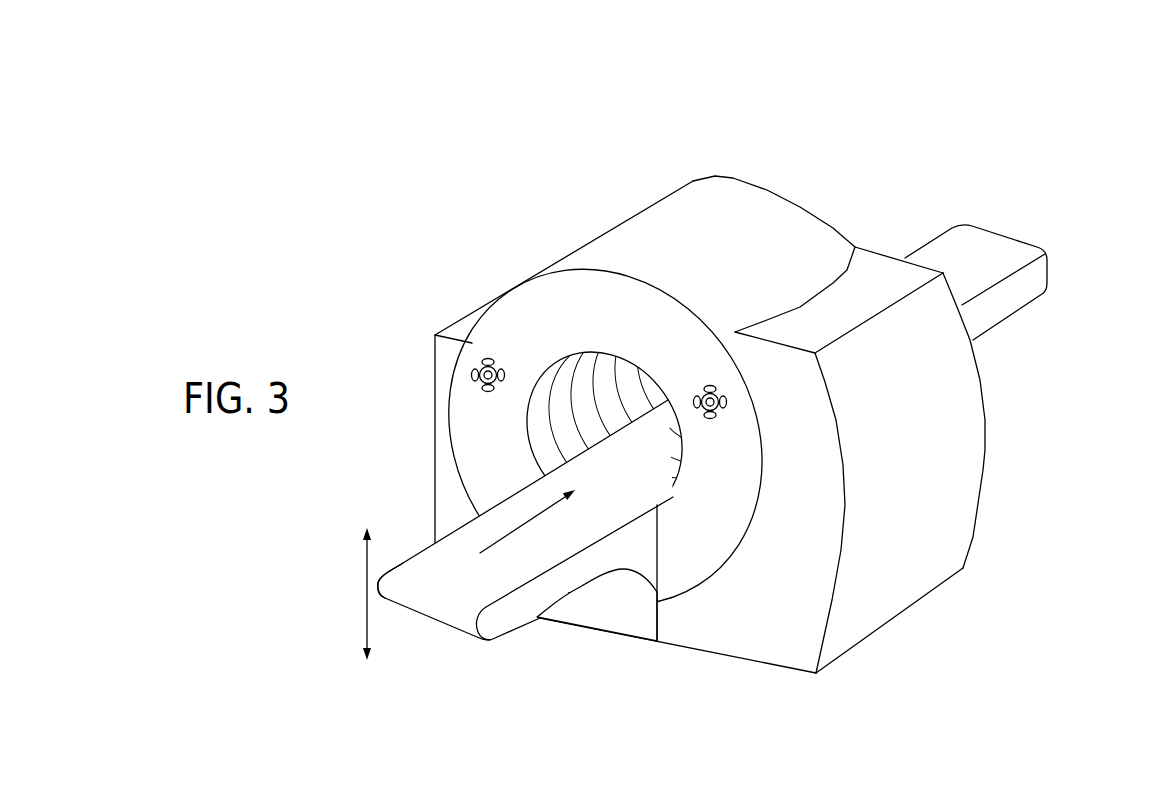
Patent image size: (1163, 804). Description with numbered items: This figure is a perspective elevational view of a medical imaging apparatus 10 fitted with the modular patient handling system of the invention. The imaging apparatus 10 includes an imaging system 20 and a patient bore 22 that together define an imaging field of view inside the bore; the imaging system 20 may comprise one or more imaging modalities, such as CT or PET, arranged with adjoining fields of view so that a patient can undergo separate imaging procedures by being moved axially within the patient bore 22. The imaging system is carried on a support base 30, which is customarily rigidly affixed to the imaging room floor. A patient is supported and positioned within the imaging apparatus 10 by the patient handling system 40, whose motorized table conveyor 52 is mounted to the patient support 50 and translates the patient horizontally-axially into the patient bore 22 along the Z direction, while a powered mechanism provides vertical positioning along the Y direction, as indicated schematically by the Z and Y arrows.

The medical imaging apparatus 10 is at (689, 419).
The imaging system 20 is at (1008, 438).
The patient bore 22 is at (565, 388).
The support base 30 is at (951, 598).
The patient handling system 40 is at (1041, 212).
The patient support 50 is at (410, 644).
The table conveyor 52 is at (425, 573).